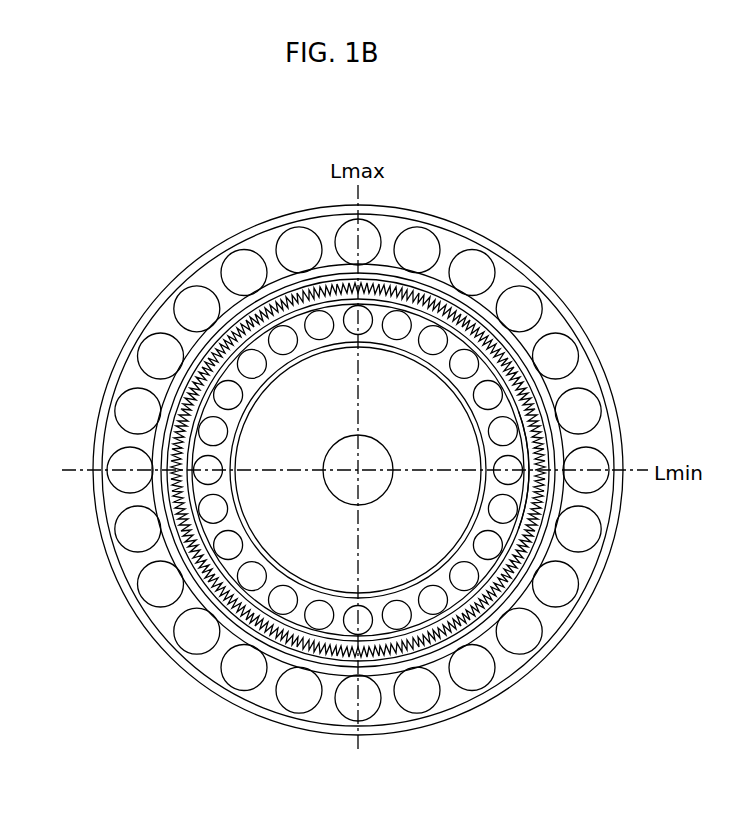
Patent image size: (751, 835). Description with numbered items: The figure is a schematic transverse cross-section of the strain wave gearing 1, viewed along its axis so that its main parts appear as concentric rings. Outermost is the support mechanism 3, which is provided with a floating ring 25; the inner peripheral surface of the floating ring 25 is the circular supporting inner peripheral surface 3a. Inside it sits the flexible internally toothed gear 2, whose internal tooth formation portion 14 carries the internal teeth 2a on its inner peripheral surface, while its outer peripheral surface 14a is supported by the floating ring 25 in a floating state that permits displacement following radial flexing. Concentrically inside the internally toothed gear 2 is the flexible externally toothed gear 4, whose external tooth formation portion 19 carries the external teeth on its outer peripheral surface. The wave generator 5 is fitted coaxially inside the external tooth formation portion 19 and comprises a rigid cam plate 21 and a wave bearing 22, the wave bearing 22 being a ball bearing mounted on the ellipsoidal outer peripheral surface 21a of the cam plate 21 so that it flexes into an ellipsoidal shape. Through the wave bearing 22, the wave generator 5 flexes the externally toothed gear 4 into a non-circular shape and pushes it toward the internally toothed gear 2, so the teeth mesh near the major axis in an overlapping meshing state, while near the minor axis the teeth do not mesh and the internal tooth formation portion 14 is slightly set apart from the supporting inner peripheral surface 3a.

The strain wave gearing 1 is at (563, 240).
The flexible internally toothed gear 2 is at (540, 397).
The internal teeth 2a is at (177, 493).
The support mechanism 3 is at (557, 318).
The supporting inner peripheral surface 3a is at (181, 399).
The flexible externally toothed gear 4 is at (543, 445).
The wave generator 5 is at (527, 493).
The internal tooth formation portion 14 is at (167, 457).
The outer peripheral surface of the internal tooth formation portion 14a is at (168, 448).
The external tooth formation portion 19 is at (215, 535).
The rigid cam plate 21 is at (300, 562).
The ellipsoidal outer peripheral surface 21a is at (285, 578).
The wave bearing 22 is at (260, 550).
The floating ring 25 is at (192, 357).